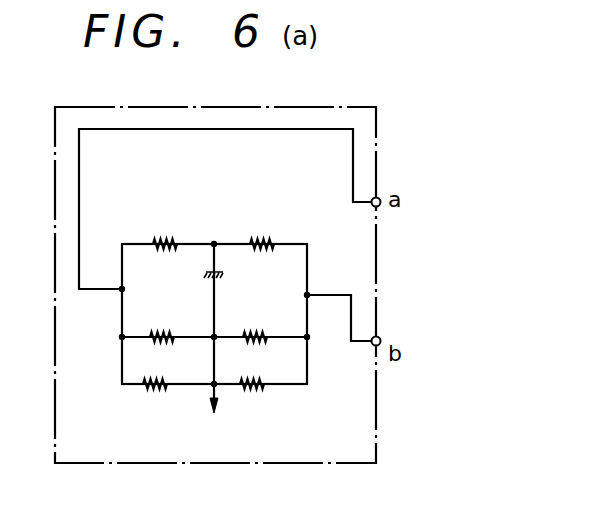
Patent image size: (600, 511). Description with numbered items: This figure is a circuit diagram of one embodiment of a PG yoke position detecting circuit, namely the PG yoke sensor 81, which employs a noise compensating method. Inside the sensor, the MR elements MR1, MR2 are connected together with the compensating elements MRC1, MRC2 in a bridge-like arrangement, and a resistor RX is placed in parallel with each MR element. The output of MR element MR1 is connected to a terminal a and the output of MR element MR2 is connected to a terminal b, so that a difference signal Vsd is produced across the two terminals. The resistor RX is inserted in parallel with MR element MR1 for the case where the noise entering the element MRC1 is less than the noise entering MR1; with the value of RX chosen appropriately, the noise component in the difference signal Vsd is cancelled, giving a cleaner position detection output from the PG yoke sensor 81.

The PG yoke sensor 81 is at (378, 108).
The element MRC1 is at (167, 254).
The element MRC2 is at (263, 254).
The MR element MR1 is at (157, 328).
The MR element MR2 is at (253, 328).
The resistor RX is at (153, 377).
The difference signal Vsd is at (393, 207).